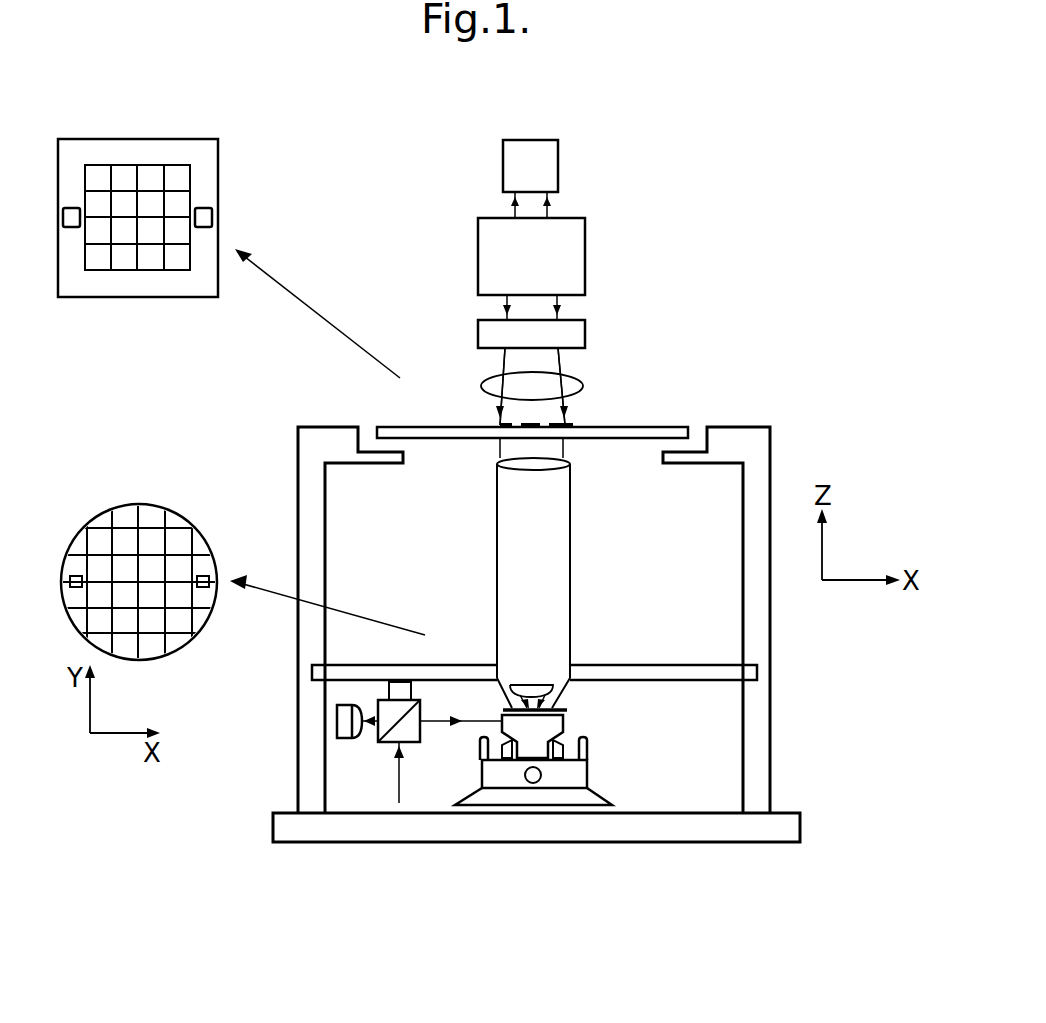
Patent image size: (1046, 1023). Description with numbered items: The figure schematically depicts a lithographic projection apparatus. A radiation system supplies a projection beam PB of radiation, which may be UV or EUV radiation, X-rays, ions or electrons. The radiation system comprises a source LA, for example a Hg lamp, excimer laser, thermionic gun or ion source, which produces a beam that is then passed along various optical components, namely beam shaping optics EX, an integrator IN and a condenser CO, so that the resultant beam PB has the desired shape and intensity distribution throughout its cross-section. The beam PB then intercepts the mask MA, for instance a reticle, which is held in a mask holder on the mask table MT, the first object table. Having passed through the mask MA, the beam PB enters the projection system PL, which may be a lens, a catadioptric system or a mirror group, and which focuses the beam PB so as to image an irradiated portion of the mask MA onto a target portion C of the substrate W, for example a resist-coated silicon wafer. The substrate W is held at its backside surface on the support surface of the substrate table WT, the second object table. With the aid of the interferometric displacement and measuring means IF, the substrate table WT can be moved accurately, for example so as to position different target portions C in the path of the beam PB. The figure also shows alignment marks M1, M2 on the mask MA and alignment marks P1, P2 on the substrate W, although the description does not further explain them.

The source LA is at (558, 173).
The beam shaping optics EX is at (585, 257).
The integrator IN is at (585, 330).
The condenser CO is at (583, 387).
The projection beam PB is at (542, 413).
The mask MA is at (117, 139).
The mask table MT is at (672, 427).
The projection system PL is at (570, 557).
The substrate W is at (133, 503).
The substrate table WT is at (563, 720).
The interferometric displacement and measuring means IF is at (368, 746).
The mask alignment mark M1 is at (200, 208).
The mask alignment mark M2 is at (66, 208).
The target portion C is at (127, 236).
The substrate alignment mark P1 is at (74, 576).
The substrate alignment mark P2 is at (201, 576).